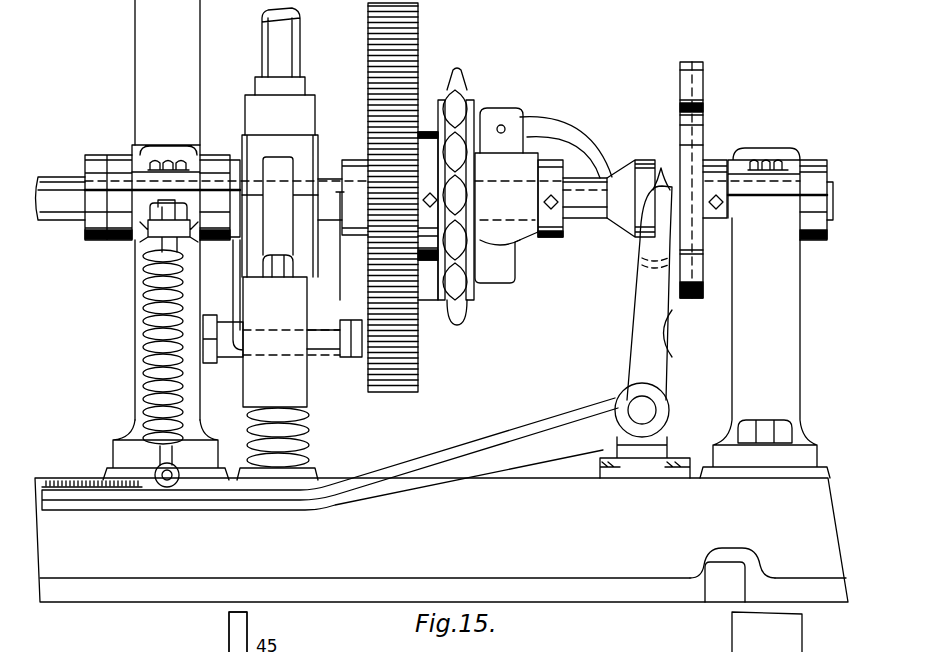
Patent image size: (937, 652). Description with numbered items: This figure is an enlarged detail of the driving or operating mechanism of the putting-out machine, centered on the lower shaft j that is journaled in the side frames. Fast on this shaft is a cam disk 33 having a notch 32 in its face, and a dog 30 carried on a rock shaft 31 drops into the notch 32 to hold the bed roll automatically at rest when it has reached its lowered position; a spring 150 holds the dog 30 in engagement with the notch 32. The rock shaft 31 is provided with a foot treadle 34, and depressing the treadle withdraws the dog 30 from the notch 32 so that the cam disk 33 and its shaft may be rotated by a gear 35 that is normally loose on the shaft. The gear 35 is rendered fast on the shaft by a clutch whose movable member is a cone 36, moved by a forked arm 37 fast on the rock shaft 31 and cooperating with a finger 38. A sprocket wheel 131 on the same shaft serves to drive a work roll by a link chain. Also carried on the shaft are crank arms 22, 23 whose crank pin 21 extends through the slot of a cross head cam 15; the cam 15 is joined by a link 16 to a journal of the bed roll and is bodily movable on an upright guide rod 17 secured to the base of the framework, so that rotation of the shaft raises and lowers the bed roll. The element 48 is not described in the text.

The cam 15 is at (300, 262).
The link 16 is at (286, 50).
The upright guide rod 17 is at (280, 278).
The crank pin 21 is at (322, 370).
The crank arm 22 is at (335, 298).
The crank arm 23 is at (226, 370).
The dog 30 is at (640, 305).
The rock shaft 31 is at (652, 410).
The notch 32 is at (703, 256).
The cam disk 33 is at (703, 127).
The foot treadle 34 is at (467, 455).
The gear 35 is at (418, 352).
The cone 36 is at (625, 238).
The forked arm 37 is at (665, 340).
The finger 38 is at (573, 145).
The bracket 48 is at (248, 617).
The sprocket wheel 131 is at (468, 312).
The spring 150 is at (143, 337).